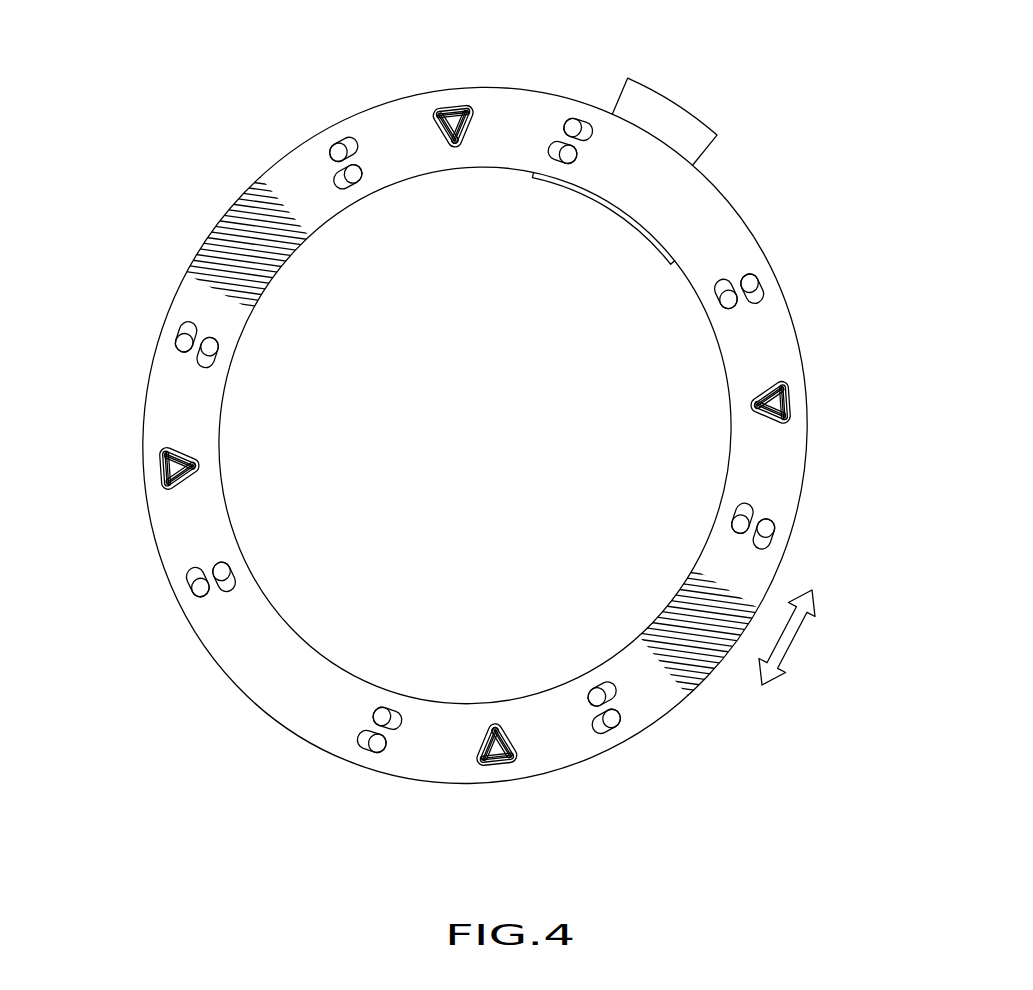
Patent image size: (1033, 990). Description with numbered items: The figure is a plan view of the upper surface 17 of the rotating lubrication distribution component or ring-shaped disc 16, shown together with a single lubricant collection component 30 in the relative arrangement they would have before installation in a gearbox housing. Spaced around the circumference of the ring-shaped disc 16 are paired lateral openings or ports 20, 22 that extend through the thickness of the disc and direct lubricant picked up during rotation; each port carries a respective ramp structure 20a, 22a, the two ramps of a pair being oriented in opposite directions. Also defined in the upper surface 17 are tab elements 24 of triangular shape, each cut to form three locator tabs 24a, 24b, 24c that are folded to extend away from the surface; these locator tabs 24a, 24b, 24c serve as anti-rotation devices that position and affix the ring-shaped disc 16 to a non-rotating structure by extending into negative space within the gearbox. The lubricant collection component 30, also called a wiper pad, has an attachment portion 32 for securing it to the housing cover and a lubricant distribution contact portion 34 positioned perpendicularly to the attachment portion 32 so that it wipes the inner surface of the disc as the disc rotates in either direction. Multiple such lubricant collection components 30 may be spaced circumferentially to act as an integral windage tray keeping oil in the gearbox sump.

The ring-shaped disc 16 is at (244, 148).
The upper surface 17 is at (287, 672).
The lateral opening or port 20 is at (562, 162).
The ramp structure 20a is at (210, 360).
The lateral opening or port 22 is at (573, 128).
The ramp structure 22a is at (183, 325).
The tab element 24 is at (449, 92).
The locator tab 24a is at (788, 402).
The locator tab 24b is at (192, 458).
The locator tab 24c is at (441, 152).
The lubricant collection component 30 is at (692, 96).
The attachment portion 32 is at (698, 133).
The lubricant distribution contact portion 34 is at (635, 232).